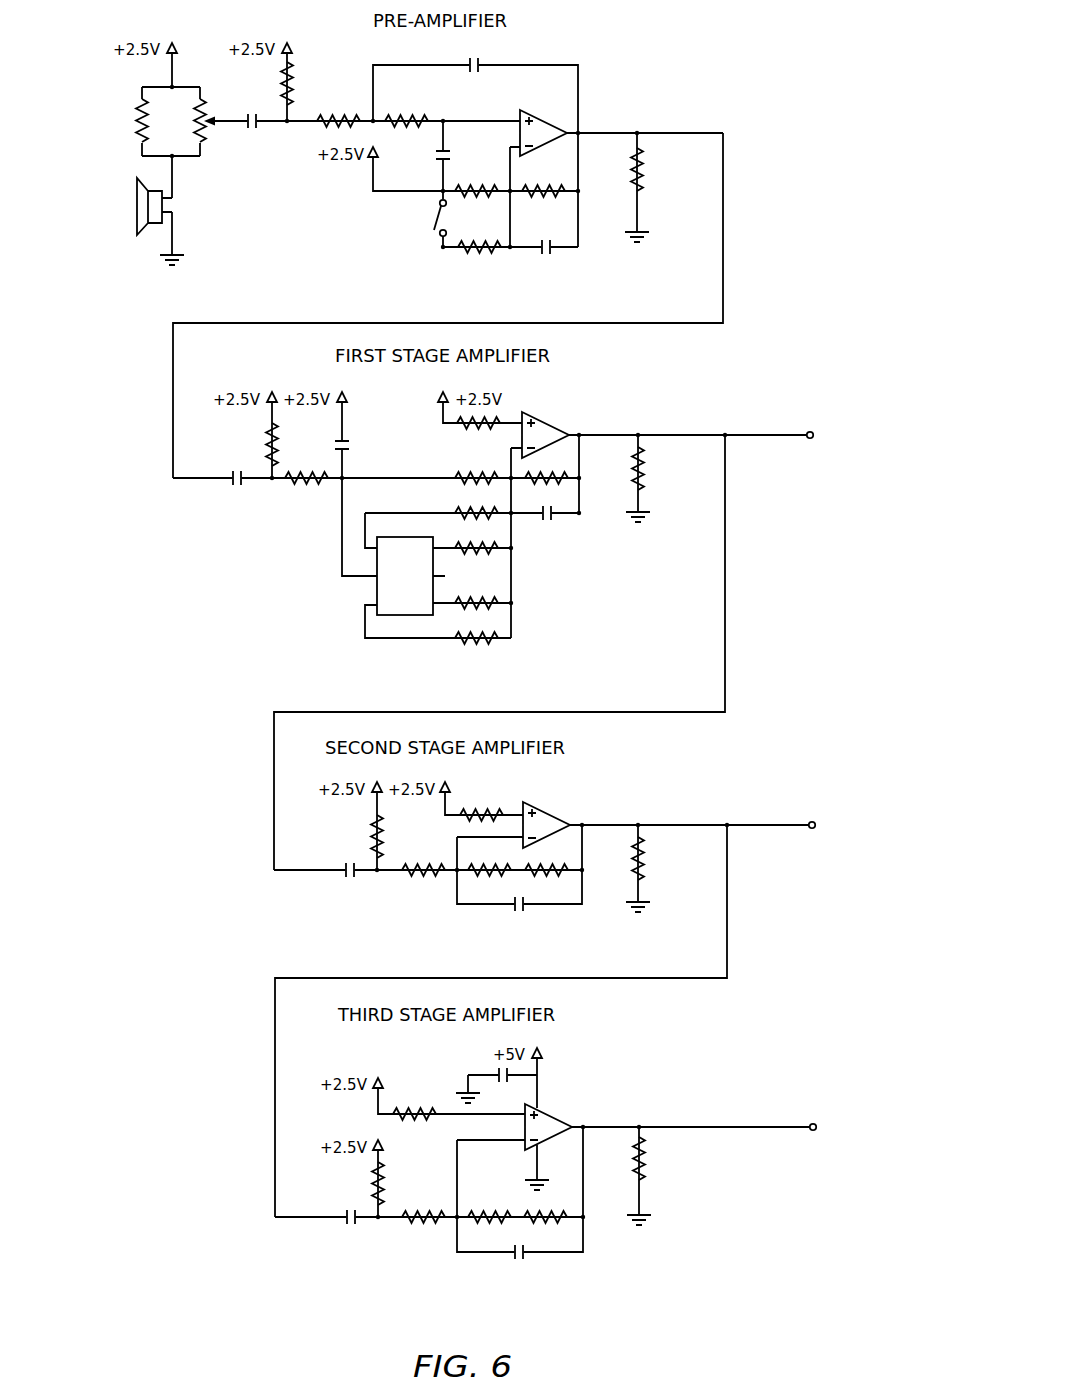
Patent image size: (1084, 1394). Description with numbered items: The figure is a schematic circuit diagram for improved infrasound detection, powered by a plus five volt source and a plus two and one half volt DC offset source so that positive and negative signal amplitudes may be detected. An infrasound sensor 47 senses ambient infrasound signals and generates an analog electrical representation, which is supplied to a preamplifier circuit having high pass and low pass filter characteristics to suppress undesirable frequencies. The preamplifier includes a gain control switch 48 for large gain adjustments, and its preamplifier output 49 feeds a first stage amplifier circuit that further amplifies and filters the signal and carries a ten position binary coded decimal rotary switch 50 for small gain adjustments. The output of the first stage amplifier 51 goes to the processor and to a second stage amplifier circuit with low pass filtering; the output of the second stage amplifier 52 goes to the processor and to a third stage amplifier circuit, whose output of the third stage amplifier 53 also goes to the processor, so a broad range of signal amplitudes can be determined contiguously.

The infrasound sensor 47 is at (124, 207).
The gain control switch 48 is at (424, 218).
The pre-amplifier output 49 is at (737, 133).
The ten position binary coded decimal rotary switch 50 is at (364, 592).
The output of the first stage amplifier 51 is at (828, 435).
The output of the second stage amplifier 52 is at (830, 825).
The output of the third stage amplifier 53 is at (831, 1127).